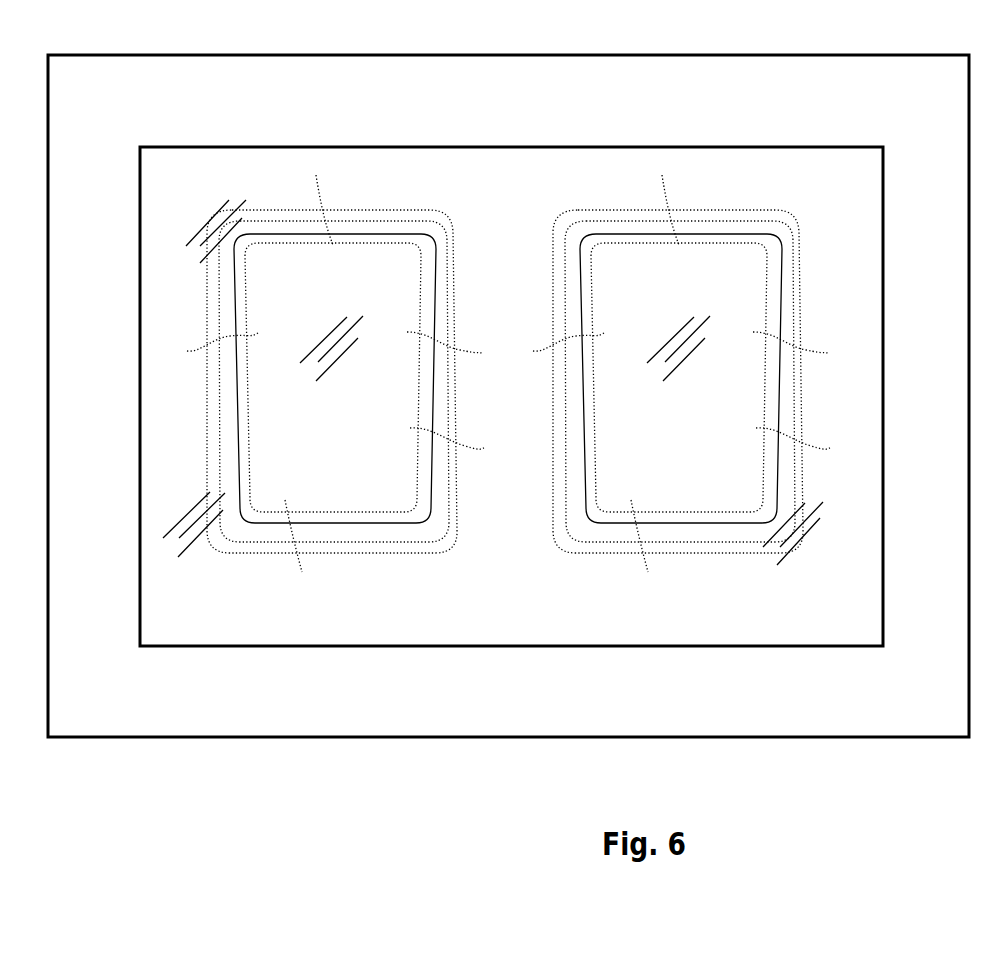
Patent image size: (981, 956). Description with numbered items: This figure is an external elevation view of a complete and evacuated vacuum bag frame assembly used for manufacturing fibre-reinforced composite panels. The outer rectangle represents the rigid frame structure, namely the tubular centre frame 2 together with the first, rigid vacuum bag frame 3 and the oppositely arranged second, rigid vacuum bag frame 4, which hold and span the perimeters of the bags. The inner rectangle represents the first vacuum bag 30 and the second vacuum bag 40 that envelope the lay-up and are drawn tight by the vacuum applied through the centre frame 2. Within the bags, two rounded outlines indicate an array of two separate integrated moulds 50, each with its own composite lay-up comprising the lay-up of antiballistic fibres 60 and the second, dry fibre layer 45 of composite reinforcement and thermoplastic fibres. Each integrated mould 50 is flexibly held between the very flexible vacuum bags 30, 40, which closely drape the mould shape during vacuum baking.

The first, rigid vacuum bag frame 3 is at (514, 381).
The tubular centre frame 2 is at (508, 396).
The second, rigid vacuum bag frame 4 is at (807, 132).
The first vacuum bag 30 is at (511, 396).
The second vacuum bag 40 is at (810, 617).
The integrated mould 50 is at (190, 428).
The lay-up of fibres 60 is at (493, 382).
The second, dry fibre layer 45 is at (506, 377).